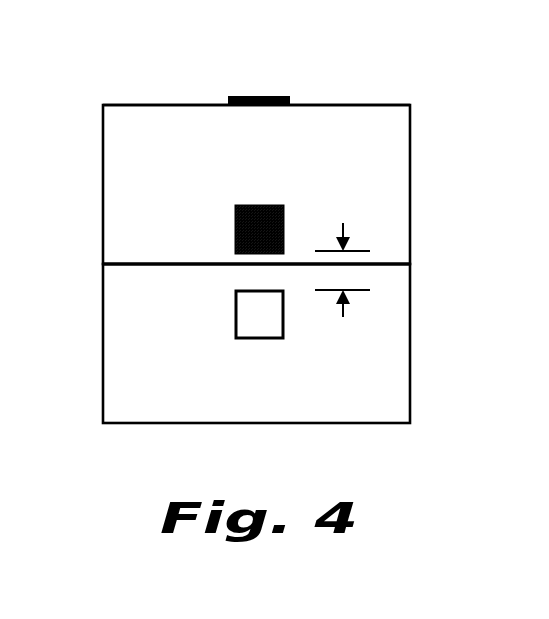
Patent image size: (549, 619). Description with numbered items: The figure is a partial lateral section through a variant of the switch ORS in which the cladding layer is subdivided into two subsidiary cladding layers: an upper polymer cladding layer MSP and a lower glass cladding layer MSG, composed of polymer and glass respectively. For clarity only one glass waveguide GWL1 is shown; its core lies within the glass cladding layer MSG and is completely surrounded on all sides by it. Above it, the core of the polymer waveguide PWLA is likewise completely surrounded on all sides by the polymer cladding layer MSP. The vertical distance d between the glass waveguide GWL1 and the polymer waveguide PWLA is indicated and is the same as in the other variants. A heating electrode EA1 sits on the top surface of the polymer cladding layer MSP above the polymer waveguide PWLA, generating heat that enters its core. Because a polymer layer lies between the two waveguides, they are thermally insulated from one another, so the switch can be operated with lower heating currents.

The switch ORS is at (256, 61).
The heating electrode EA1 is at (214, 81).
The polymer cladding layer MSP is at (218, 184).
The glass cladding layer MSG is at (216, 343).
The polymer waveguide PWLA is at (206, 215).
The glass waveguide GWL1 is at (204, 302).
The vertical distance d is at (342, 270).